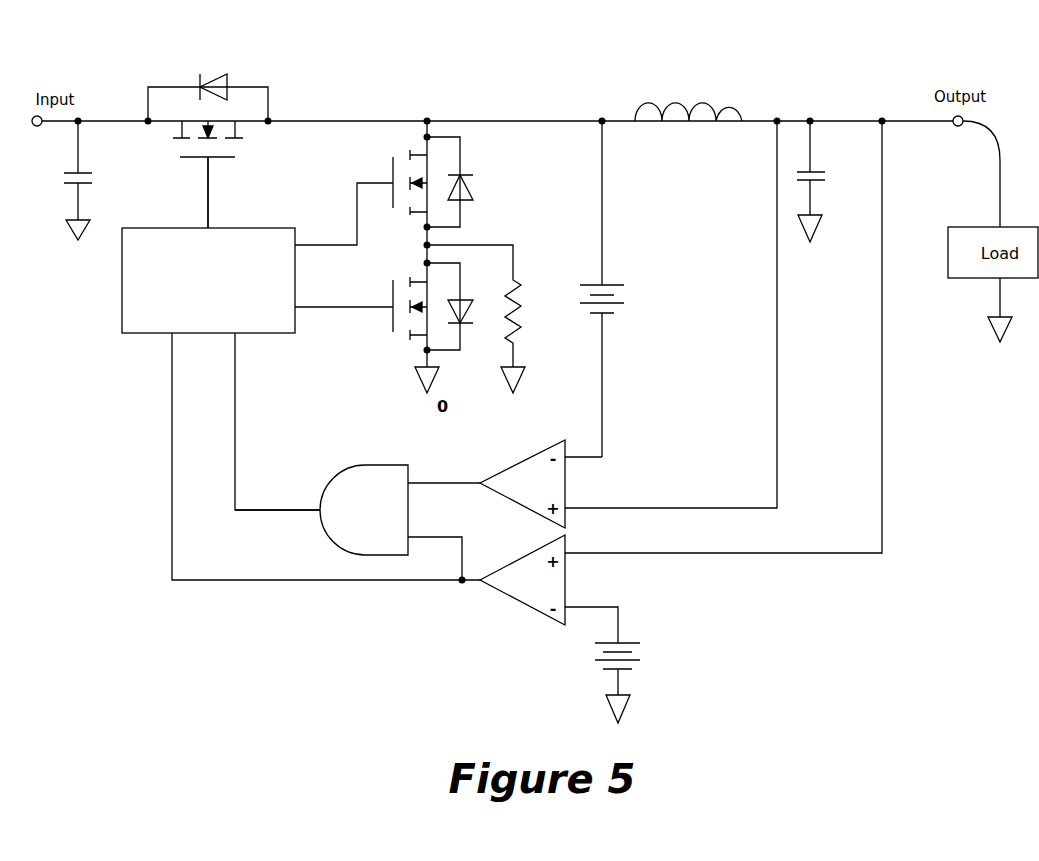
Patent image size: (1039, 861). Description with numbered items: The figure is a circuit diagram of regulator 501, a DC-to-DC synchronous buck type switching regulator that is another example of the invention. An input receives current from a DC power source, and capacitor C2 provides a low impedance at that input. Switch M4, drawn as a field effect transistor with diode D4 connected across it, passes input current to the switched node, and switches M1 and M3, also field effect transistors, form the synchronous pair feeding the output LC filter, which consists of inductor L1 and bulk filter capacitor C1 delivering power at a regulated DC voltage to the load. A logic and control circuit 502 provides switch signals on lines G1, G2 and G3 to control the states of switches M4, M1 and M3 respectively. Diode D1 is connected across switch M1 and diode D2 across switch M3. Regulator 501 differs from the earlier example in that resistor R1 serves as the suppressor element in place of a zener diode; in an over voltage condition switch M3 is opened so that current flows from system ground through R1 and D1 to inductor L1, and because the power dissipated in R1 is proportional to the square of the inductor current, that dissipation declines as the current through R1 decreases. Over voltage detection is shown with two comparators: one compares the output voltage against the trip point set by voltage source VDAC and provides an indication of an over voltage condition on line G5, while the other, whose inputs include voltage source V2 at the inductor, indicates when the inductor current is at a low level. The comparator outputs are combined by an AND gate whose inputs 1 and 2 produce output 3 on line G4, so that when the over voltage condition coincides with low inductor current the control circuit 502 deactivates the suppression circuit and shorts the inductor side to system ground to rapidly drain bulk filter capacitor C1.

The regulator 501 is at (490, 66).
The logic and control block 502 is at (208, 280).
The bulk filter capacitor C1 is at (825, 192).
The capacitor C2 is at (91, 192).
The diode D1 is at (468, 182).
The diode D2 is at (462, 306).
The diode D4 is at (208, 86).
The switch M1 is at (400, 244).
The switch M3 is at (401, 318).
The switch M4 is at (194, 174).
The resistor R1 is at (489, 330).
The inductor L1 is at (688, 98).
The voltage source V2 is at (598, 289).
The DAC voltage source VDAC is at (620, 670).
The line G1 is at (226, 192).
The line G2 is at (344, 214).
The line G3 is at (344, 293).
The signal line G4 is at (277, 421).
The line G5 is at (326, 456).
The AND gate input 1 is at (444, 471).
The AND gate input 2 is at (435, 547).
The AND gate output 3 is at (277, 499).